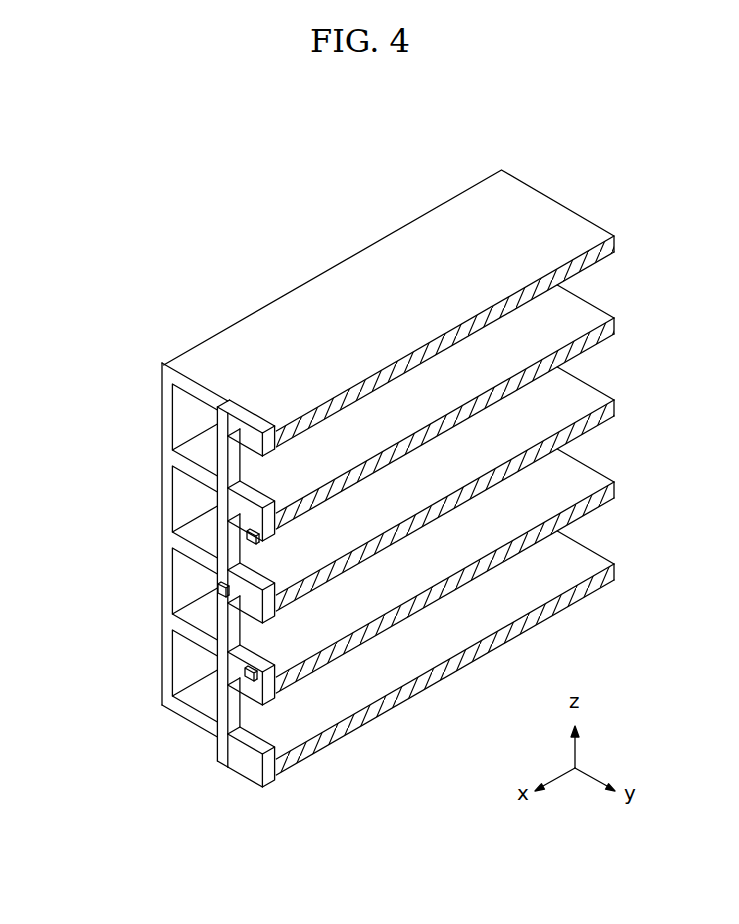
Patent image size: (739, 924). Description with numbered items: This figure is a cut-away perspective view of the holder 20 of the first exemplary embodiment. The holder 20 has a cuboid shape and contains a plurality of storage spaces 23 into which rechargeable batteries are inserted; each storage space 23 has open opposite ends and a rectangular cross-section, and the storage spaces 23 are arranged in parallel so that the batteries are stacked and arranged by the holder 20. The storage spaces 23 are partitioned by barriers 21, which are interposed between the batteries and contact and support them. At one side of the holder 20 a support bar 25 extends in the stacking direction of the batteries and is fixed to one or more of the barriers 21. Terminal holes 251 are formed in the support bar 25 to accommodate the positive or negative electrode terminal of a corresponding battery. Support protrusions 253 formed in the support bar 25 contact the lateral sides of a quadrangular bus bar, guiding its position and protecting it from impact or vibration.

The holder 20 is at (268, 275).
The barrier 21 is at (586, 314).
The storage space 23 is at (563, 400).
The support bar 25 is at (270, 773).
The terminal hole 251 is at (248, 492).
The support protrusion 253 is at (244, 670).